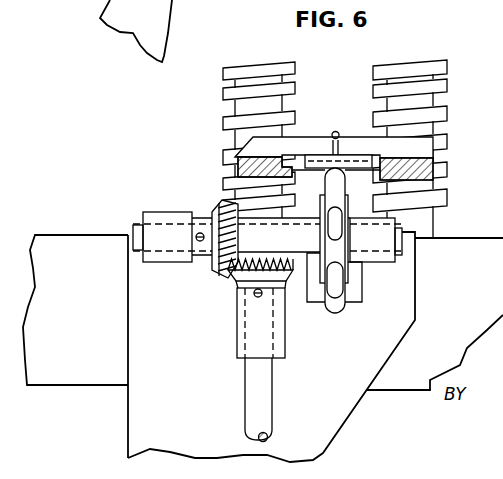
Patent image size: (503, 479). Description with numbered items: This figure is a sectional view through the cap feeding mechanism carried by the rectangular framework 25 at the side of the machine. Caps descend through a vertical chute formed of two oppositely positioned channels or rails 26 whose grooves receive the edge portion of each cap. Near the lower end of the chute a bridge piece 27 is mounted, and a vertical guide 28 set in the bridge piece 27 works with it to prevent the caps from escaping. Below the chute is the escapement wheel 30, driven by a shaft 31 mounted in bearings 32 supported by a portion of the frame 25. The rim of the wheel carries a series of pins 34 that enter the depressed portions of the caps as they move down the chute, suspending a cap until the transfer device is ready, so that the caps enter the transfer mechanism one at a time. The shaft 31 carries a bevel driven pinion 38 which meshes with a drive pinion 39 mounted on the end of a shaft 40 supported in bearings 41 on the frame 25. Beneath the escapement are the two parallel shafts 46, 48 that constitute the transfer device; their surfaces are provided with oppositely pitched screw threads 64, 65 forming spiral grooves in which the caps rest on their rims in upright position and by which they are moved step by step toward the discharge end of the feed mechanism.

The rectangular framework 25 is at (137, 416).
The channels or rails 26 is at (422, 170).
The bridge piece 27 is at (413, 150).
The vertical guide 28 is at (335, 151).
The escapement wheel 30 is at (355, 278).
The shaft 31 is at (300, 250).
The bearings 32 is at (170, 260).
The pins 34 is at (335, 313).
The bevel driven pinion 38 is at (220, 273).
The drive pinion 39 is at (235, 278).
The shaft 40 is at (260, 405).
The bearings 41 is at (280, 352).
The shaft 46 is at (243, 140).
The shaft 48 is at (438, 149).
The screw threads 64 is at (260, 117).
The screw threads 65 is at (445, 95).